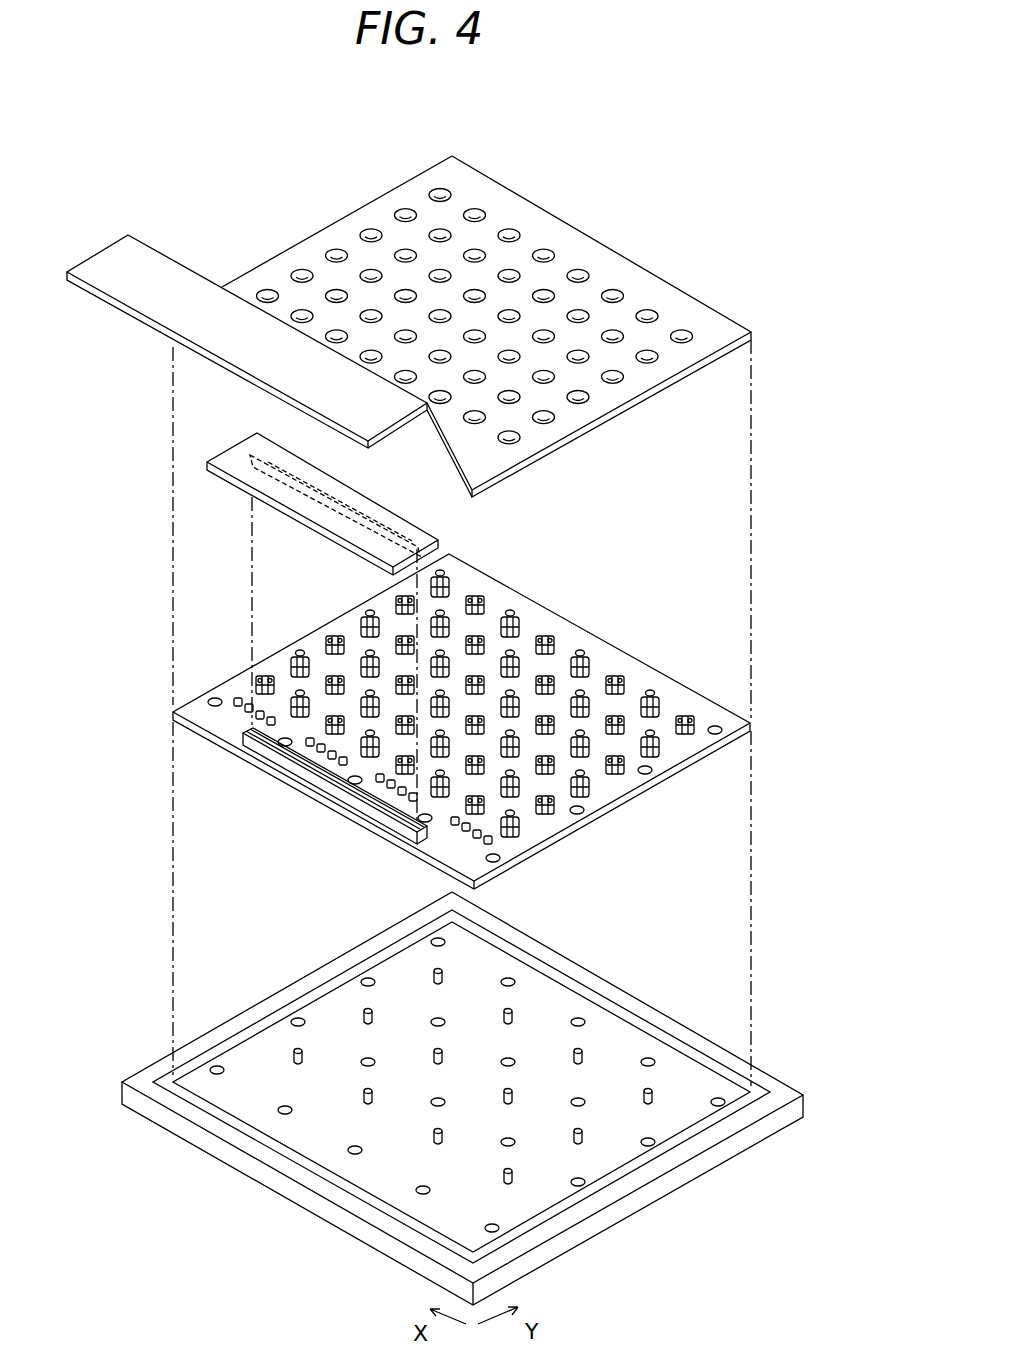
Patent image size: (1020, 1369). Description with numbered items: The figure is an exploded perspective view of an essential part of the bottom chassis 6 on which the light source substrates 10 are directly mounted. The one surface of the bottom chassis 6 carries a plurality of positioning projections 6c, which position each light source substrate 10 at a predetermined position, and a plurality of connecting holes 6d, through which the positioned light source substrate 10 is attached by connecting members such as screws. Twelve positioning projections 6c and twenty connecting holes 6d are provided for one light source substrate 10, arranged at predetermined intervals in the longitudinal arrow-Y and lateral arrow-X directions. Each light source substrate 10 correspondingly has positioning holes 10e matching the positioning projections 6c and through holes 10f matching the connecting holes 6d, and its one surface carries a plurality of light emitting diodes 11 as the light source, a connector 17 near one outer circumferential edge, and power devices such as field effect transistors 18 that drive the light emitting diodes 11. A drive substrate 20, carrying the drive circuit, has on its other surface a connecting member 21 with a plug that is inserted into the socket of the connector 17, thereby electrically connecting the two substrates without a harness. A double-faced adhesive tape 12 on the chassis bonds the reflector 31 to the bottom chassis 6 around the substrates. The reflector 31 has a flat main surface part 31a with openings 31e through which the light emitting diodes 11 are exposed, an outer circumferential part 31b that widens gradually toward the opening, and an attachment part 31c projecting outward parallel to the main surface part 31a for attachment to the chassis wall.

The bottom chassis 6 is at (462, 1098).
The positioning projections 6c is at (515, 1178).
The connecting holes 6d is at (497, 1233).
The light source substrate 10 is at (461, 734).
The positioning holes 10e is at (520, 811).
The through holes 10f is at (497, 862).
The light emitting diodes 11 is at (609, 672).
The double-faced adhesive tape 12 is at (635, 1013).
The connector 17 is at (335, 806).
The field effect transistors 18 is at (378, 784).
The drive substrate 20 is at (318, 488).
The connecting member 21 is at (304, 498).
The reflector 31 is at (409, 349).
The main surface part 31a is at (486, 326).
The outer circumferential part 31b is at (432, 456).
The attachment part 31c is at (94, 266).
The openings 31e is at (370, 230).